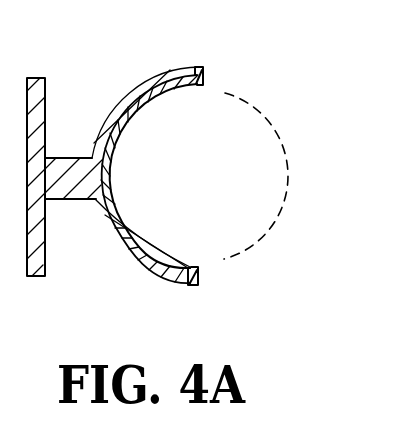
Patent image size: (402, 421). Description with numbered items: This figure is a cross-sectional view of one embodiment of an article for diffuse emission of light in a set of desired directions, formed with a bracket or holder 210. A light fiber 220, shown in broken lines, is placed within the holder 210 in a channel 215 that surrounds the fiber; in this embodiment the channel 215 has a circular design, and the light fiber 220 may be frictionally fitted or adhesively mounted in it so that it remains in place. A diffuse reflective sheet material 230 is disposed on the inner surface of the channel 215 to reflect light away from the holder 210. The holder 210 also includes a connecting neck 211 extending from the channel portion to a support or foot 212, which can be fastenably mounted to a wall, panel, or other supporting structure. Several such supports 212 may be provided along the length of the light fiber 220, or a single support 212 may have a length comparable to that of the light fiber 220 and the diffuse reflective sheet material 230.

The bracket or holder 210 is at (168, 70).
The connecting neck 211 is at (81, 190).
The support or foot 212 is at (37, 73).
The channel 215 is at (192, 266).
The light fiber 220 is at (289, 147).
The diffuse reflective sheet material 230 is at (205, 81).